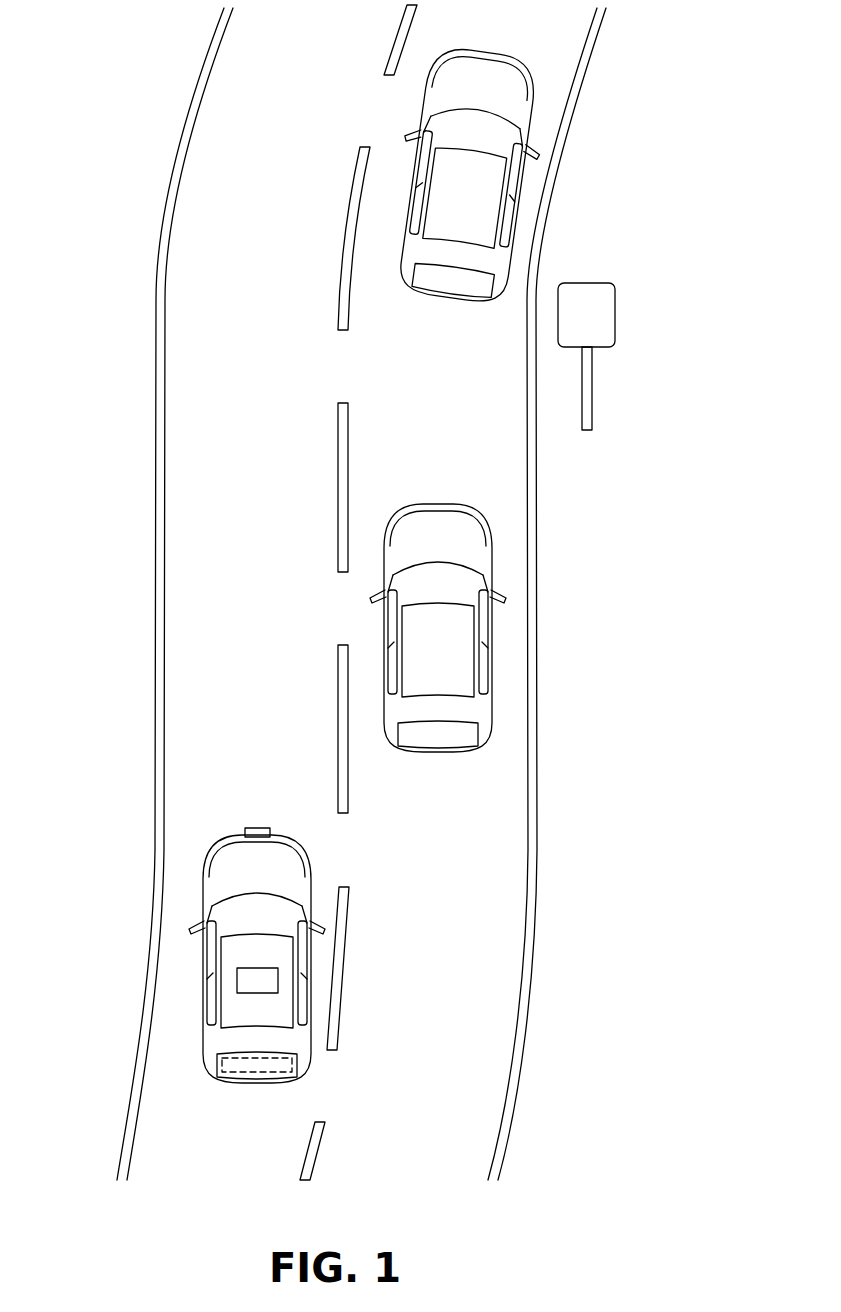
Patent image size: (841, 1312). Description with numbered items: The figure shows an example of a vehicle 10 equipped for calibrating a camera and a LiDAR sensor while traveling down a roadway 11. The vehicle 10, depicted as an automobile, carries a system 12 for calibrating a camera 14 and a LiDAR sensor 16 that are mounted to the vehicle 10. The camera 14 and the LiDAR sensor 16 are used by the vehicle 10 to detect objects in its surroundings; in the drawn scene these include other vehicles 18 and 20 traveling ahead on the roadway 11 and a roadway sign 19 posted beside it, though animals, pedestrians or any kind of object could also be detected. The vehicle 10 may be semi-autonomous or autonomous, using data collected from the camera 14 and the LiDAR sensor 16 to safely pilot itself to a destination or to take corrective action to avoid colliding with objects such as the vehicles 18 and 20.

The vehicle 10 is at (206, 890).
The roadway 11 is at (200, 763).
The system for calibrating a camera and a LiDAR sensor 12 is at (222, 1067).
The camera 14 is at (257, 826).
The LiDAR sensor 16 is at (278, 981).
The vehicle 18 is at (492, 553).
The roadway sign 19 is at (616, 300).
The vehicle 20 is at (525, 170).